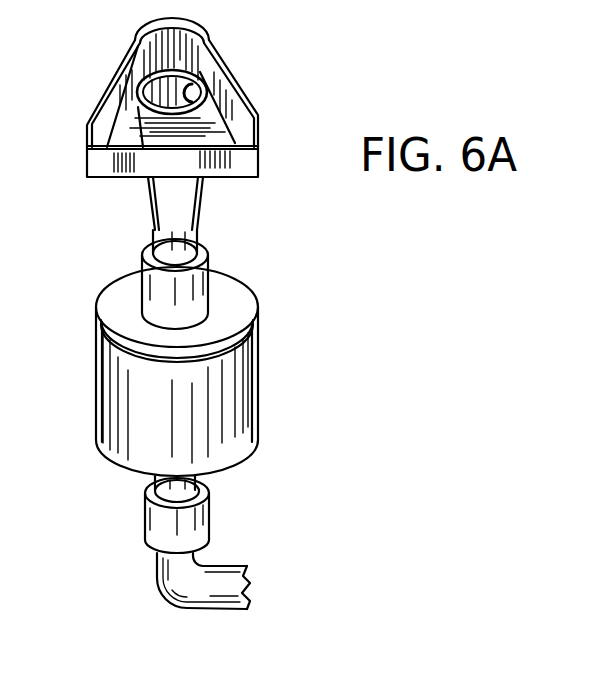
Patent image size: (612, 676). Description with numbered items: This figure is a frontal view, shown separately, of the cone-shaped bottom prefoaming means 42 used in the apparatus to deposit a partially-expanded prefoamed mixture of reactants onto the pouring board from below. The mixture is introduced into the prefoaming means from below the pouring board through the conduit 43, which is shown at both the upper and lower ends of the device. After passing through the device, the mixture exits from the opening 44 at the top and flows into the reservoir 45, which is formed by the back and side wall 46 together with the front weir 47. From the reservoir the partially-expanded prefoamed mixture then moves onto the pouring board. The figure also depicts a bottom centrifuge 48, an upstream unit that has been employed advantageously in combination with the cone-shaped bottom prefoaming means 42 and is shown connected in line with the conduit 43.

The cone-shaped bottom prefoaming means 42 is at (142, 194).
The conduit 43 is at (207, 233).
The opening 44 is at (185, 87).
The reservoir 45 is at (139, 123).
The back and side wall 46 is at (181, 32).
The front weir 47 is at (115, 158).
The bottom centrifuge 48 is at (266, 392).